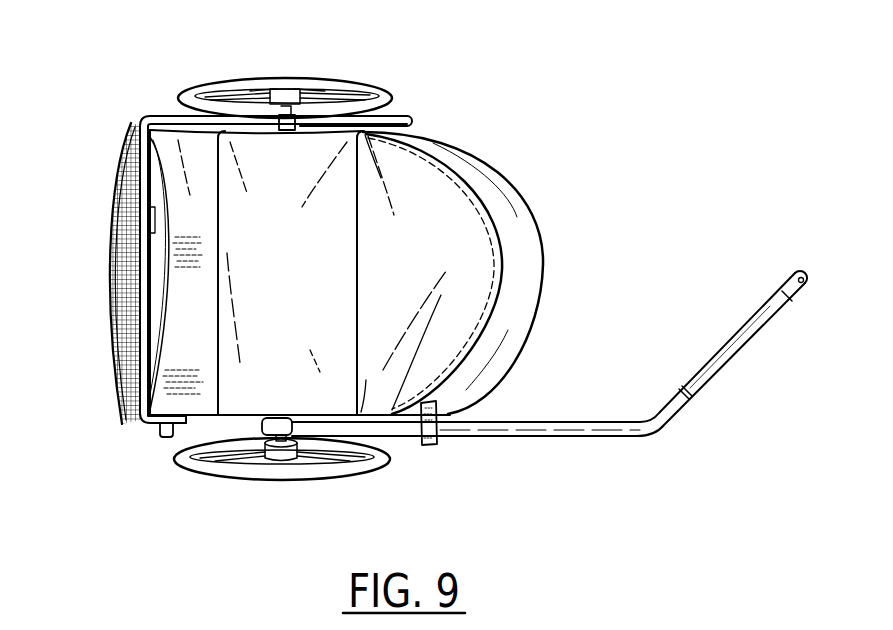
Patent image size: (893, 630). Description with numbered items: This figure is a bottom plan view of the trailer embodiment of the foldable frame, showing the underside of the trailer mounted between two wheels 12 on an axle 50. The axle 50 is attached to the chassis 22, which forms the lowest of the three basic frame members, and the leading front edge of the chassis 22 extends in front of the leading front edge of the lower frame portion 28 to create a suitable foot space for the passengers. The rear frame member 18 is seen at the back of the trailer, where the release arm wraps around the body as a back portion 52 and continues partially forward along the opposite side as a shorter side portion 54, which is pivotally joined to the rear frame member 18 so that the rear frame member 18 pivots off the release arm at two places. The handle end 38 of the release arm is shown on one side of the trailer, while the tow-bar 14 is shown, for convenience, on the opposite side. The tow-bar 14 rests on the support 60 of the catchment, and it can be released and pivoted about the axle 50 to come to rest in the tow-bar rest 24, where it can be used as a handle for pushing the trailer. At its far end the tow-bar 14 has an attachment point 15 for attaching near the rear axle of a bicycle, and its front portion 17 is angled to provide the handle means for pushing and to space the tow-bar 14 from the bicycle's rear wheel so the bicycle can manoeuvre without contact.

The wheels 12 is at (347, 88).
The tow-bar 14 is at (580, 432).
The attachment point 15 is at (797, 278).
The front portion of the tow-bar 17 is at (741, 348).
The rear frame member 18 is at (113, 272).
The chassis 22 is at (523, 207).
The tow-bar rest 24 is at (162, 435).
The lower frame portion 28 is at (497, 312).
The handle end of the release arm 38 is at (414, 120).
The axle 50 is at (262, 418).
The back portion of the release arm 52 is at (140, 142).
The shorter side portion of the release arm 54 is at (155, 425).
The support of the catchment 60 is at (440, 446).